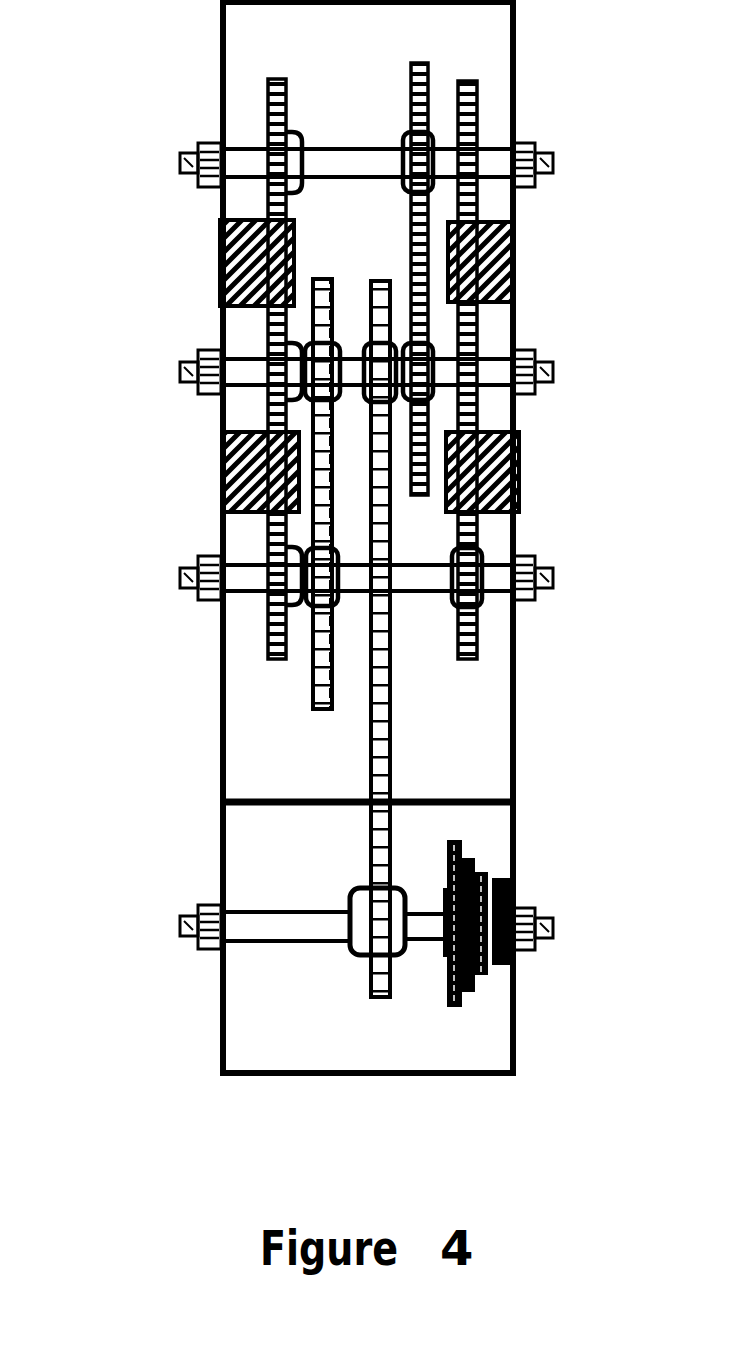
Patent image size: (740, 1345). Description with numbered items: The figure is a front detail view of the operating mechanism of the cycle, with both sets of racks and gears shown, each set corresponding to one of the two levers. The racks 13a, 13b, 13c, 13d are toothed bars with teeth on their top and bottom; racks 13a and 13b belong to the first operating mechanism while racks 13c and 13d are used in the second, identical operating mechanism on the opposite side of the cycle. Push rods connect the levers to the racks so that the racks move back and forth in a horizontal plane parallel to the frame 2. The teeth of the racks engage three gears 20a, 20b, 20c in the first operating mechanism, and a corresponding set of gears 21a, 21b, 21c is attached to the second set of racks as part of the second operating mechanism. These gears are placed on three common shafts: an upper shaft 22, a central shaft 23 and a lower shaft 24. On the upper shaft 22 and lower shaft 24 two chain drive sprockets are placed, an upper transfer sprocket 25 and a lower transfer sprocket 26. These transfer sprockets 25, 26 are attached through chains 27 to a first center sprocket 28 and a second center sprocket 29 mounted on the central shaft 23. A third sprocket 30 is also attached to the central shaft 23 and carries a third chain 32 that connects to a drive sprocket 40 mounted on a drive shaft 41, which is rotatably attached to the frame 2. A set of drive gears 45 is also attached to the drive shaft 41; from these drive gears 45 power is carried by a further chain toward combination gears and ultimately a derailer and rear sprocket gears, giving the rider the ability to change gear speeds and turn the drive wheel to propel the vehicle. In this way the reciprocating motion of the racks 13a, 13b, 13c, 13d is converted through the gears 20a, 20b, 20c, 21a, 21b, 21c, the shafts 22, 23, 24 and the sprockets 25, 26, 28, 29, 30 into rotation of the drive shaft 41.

The frame 2 is at (220, 990).
The rack 13a is at (512, 253).
The rack 13b is at (220, 277).
The rack 13c is at (522, 473).
The rack 13d is at (222, 483).
The gear 20a is at (478, 122).
The gear 20b is at (478, 337).
The gear 20c is at (480, 640).
The gear 21a is at (267, 100).
The gear 21b is at (267, 340).
The gear 21c is at (262, 638).
The upper shaft 22 is at (223, 147).
The central shaft 23 is at (257, 388).
The lower shaft 24 is at (253, 592).
The upper transfer sprocket 25 is at (405, 143).
The lower transfer sprocket 26 is at (340, 605).
The chain 27 is at (407, 66).
The first center sprocket 28 is at (342, 310).
The second center sprocket 29 is at (390, 398).
The third sprocket 30 is at (352, 357).
The third chain 32 is at (392, 732).
The drive sprocket 40 is at (352, 896).
The drive shaft 41 is at (247, 943).
The drive gears 45 is at (510, 885).